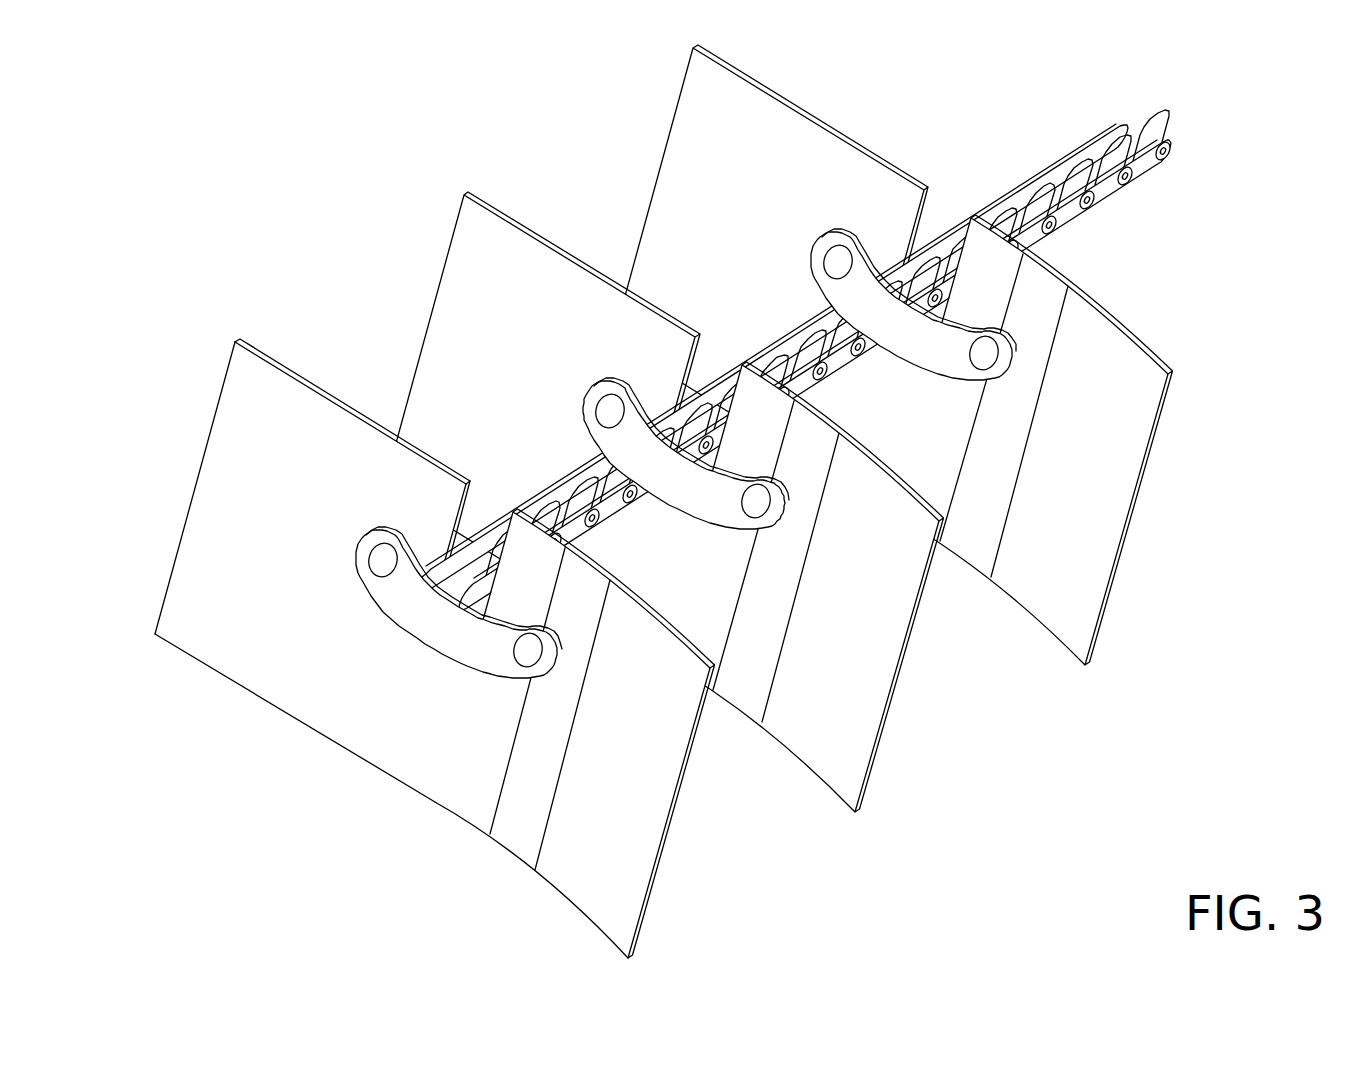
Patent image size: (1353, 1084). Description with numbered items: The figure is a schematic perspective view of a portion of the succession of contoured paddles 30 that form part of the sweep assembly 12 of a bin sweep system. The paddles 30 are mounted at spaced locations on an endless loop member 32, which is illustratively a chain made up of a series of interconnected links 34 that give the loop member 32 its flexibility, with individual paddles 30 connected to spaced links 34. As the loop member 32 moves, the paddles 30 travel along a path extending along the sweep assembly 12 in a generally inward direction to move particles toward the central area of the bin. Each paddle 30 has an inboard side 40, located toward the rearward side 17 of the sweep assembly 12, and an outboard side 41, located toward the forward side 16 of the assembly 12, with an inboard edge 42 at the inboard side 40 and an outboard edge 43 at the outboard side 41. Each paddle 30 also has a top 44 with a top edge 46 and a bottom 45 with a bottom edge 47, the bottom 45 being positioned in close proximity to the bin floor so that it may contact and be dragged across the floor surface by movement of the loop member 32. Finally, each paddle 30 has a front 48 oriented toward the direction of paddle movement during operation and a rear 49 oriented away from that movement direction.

The sweep assembly 12 is at (876, 336).
The forward side 16 is at (935, 845).
The rearward side 17 is at (327, 220).
The paddles 30 is at (296, 611).
The endless loop member 32 is at (1102, 225).
The interconnected links 34 is at (1107, 193).
The inboard side 40 is at (296, 556).
The outboard side 41 is at (612, 733).
The inboard edge 42 is at (190, 488).
The outboard edge 43 is at (658, 890).
The top 44 is at (335, 372).
The bottom 45 is at (334, 588).
The top edge 46 is at (272, 352).
The bottom edge 47 is at (348, 755).
The front 48 is at (240, 640).
The rear 49 is at (370, 403).